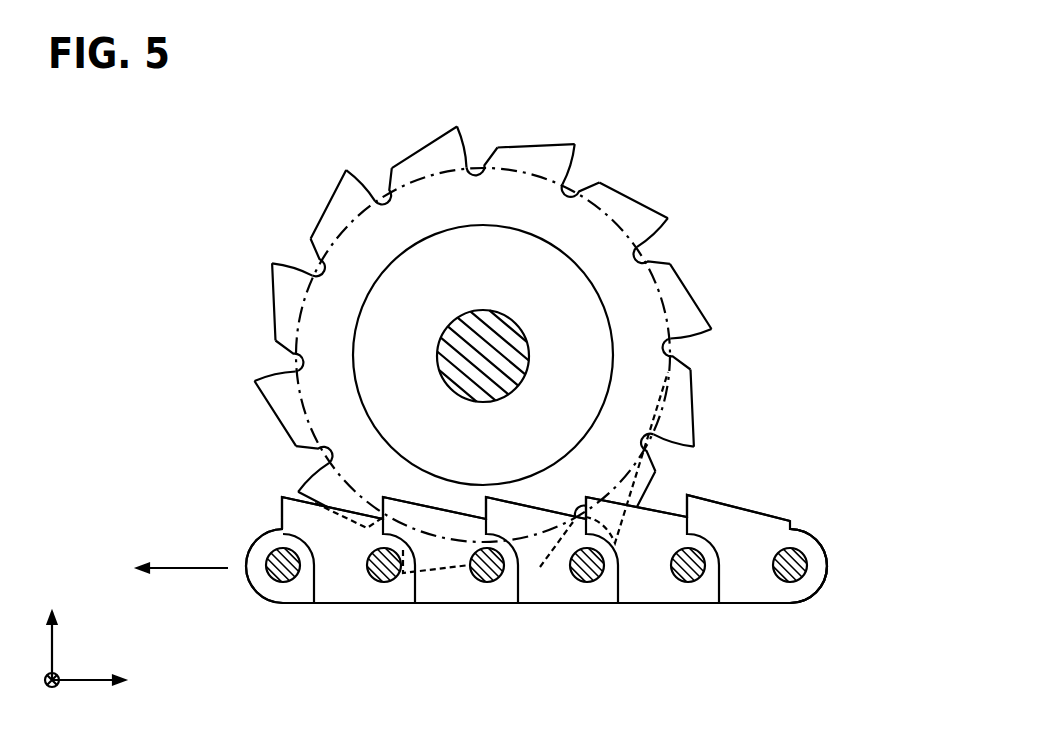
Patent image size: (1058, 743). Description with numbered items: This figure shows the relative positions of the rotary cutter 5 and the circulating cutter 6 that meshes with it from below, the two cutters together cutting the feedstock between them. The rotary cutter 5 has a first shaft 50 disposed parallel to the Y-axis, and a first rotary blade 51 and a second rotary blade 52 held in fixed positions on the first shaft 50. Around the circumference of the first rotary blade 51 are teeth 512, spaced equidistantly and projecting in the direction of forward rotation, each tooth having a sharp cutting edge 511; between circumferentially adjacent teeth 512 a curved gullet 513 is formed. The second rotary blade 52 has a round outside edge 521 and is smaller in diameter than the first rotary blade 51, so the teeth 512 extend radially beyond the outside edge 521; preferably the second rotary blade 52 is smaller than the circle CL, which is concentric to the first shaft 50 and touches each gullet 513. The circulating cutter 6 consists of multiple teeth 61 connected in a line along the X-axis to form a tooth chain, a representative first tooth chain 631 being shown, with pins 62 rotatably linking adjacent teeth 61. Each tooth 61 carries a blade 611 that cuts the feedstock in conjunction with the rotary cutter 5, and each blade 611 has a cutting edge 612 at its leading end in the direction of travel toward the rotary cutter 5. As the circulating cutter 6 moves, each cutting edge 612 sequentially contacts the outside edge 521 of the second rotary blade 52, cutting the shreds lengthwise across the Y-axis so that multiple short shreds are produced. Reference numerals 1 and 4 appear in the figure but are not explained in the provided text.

The robot 1 is at (835, 80).
The drive unit 4 is at (778, 148).
The rotary cutter 5 is at (702, 231).
The first shaft 50 is at (533, 338).
The first rotary blade 51 is at (631, 191).
The second rotary blade 52 is at (530, 226).
The cutting edge 511 is at (457, 126).
The teeth 512 is at (430, 146).
The gullet 513 is at (480, 168).
The outside edge 521 is at (503, 228).
The circulating cutter 6 is at (786, 472).
The teeth 61 is at (337, 604).
The blade 611 is at (281, 514).
The cutting edge 612 is at (282, 497).
The pins 62 is at (283, 584).
The first tooth chain 631 is at (832, 565).
The circle CL is at (700, 285).